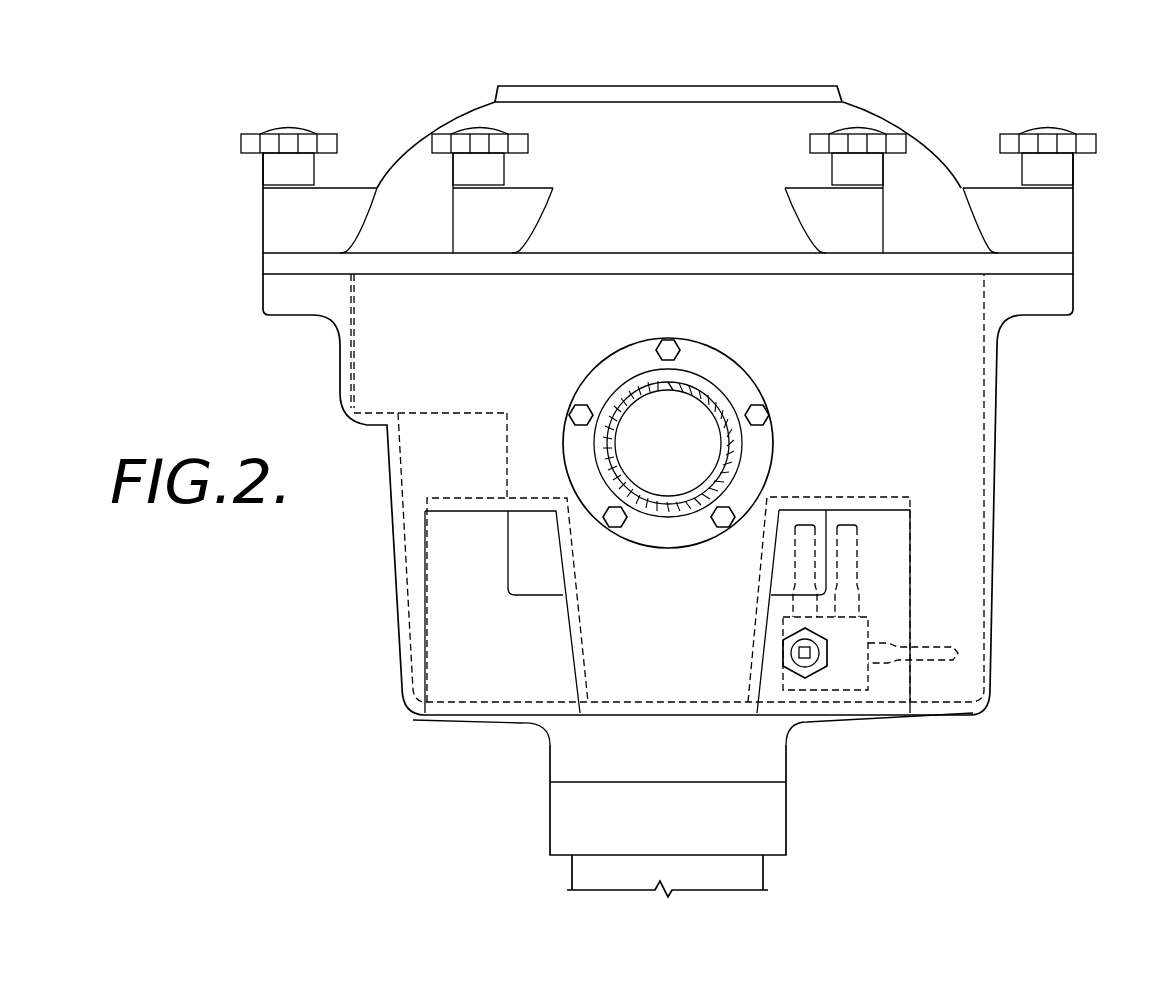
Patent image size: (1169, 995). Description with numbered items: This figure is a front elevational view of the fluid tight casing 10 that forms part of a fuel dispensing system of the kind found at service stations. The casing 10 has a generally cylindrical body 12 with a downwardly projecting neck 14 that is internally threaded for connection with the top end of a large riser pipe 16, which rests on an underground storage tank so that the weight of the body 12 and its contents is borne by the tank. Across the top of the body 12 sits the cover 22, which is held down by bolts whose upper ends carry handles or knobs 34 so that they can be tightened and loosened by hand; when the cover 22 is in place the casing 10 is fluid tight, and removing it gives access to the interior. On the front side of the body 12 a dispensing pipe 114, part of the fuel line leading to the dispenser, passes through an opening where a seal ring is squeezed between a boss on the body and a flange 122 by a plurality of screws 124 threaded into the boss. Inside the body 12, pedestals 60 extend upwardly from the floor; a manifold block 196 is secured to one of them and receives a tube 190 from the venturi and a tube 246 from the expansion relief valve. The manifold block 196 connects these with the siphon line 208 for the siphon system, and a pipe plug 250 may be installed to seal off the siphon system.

The fluid tight casing 10 is at (1035, 413).
The body 12 is at (973, 477).
The neck 14 is at (777, 805).
The riser pipe 16 is at (755, 877).
The cover 22 is at (752, 125).
The handles or knobs 34 is at (270, 148).
The pedestals 60 is at (557, 623).
The dispensing pipe 114 is at (692, 392).
The flange 122 is at (735, 372).
The screws 124 is at (578, 418).
The tube 190 is at (803, 537).
The manifold block 196 is at (862, 632).
The siphon line 208 is at (935, 655).
The tube 246 is at (848, 540).
The pipe plug 250 is at (797, 652).